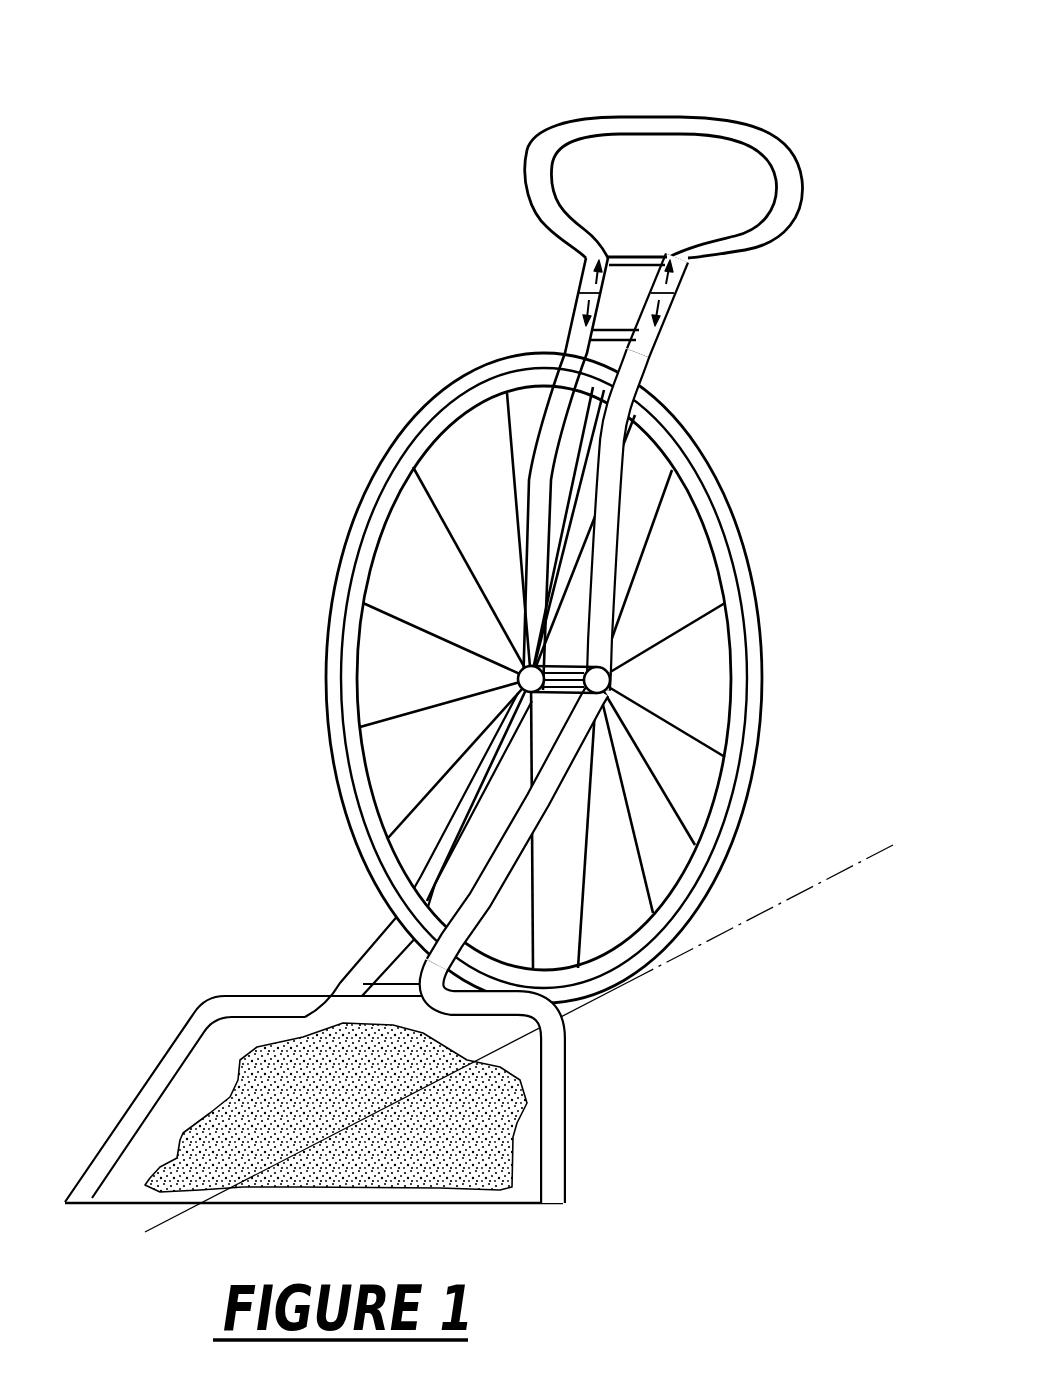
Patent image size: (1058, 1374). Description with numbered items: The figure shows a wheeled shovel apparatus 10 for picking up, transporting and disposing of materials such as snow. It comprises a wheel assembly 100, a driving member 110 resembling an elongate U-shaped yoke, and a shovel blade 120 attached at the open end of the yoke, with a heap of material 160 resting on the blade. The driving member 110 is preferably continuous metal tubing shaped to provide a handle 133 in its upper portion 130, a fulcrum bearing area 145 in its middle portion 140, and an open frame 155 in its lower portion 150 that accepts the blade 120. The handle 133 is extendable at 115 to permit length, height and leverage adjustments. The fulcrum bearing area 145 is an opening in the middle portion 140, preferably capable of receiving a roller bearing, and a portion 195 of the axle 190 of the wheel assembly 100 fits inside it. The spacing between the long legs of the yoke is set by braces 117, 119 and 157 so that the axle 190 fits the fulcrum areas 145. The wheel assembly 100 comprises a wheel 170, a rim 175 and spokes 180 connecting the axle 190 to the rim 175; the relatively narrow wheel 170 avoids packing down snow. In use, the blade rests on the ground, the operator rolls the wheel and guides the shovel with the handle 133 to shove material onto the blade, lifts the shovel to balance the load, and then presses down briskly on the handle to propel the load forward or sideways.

The apparatus 10 is at (301, 143).
The wheel assembly 100 is at (578, 651).
The driving member 110 is at (730, 345).
The extendable portion of handle 115 is at (582, 293).
The brace 117 is at (630, 255).
The brace 119 is at (607, 329).
The shovel blade 120 is at (527, 1183).
The upper portion 130 is at (662, 335).
The handle 133 is at (666, 115).
The middle portion 140 is at (620, 615).
The fulcrum bearing area 145 is at (615, 643).
The lower portion 150 is at (478, 910).
The open frame 155 is at (567, 1067).
The brace 157 is at (387, 995).
The heap of material 160 is at (370, 1106).
The wheel 170 is at (447, 387).
The rim 175 is at (417, 440).
The spokes 180 is at (425, 530).
The axle 190 is at (520, 673).
The portion of axle 195 is at (602, 678).